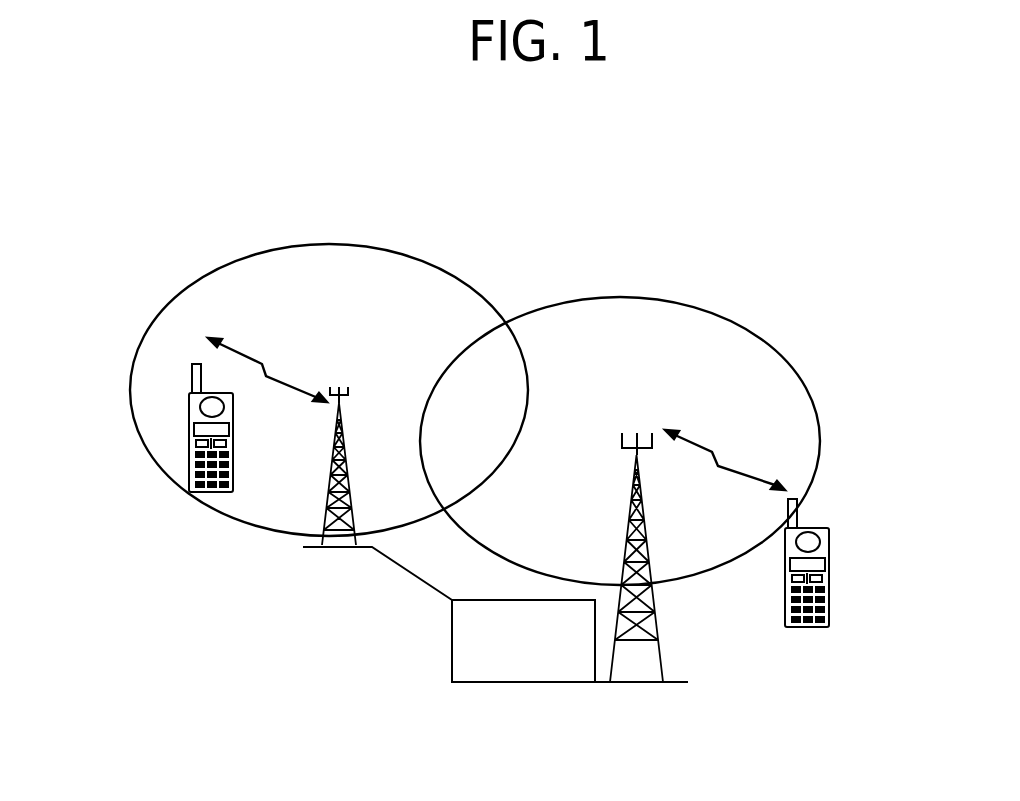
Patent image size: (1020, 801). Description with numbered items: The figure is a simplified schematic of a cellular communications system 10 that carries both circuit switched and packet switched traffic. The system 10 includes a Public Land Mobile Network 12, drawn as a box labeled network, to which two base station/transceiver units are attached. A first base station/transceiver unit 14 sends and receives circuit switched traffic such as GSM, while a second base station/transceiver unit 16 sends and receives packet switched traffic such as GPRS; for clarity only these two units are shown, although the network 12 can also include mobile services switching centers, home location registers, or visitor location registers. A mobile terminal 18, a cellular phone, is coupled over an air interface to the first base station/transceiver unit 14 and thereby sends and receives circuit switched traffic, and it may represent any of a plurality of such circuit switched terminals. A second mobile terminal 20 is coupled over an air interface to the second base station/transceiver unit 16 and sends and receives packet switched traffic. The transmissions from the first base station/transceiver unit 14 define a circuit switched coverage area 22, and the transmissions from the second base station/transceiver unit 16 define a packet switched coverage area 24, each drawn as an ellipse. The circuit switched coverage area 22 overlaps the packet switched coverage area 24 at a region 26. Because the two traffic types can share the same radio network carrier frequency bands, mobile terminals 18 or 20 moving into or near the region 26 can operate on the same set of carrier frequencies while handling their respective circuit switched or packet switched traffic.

The system 10 is at (680, 246).
The Public Land Mobile Network 12 is at (488, 673).
The first base station/transceiver unit 14 is at (653, 618).
The second base station/transceiver unit 16 is at (308, 536).
The mobile terminal 18 is at (831, 622).
The second mobile terminal 20 is at (190, 490).
The circuit switched coverage area 22 is at (797, 380).
The packet switched coverage area 24 is at (131, 375).
The region 26 is at (496, 357).